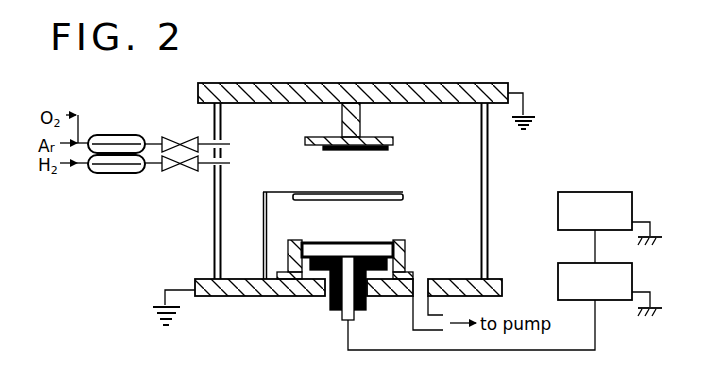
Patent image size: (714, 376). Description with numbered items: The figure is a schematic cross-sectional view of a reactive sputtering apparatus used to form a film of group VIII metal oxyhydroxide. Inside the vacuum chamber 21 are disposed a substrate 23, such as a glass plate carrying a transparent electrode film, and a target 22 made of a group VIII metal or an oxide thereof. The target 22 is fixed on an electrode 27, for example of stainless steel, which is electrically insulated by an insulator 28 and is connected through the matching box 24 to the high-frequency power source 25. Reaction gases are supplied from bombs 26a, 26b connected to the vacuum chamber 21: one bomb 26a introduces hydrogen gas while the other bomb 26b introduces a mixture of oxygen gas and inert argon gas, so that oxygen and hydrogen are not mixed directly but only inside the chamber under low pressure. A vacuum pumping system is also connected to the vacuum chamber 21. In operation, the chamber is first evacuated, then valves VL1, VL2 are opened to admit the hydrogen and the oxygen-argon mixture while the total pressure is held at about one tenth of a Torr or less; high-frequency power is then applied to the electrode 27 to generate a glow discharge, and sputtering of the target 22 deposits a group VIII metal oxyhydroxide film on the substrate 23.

The vacuum chamber 21 is at (443, 86).
The target for sputtering 22 is at (372, 243).
The substrate 23 is at (376, 150).
The matching box 24 is at (595, 281).
The high-frequency power source 25 is at (595, 211).
The bomb filled with reaction gas 26a is at (138, 173).
The bomb filled with reaction gas 26b is at (138, 135).
The electrode 27 is at (310, 253).
The insulator 28 is at (333, 310).
The valve VL1 is at (183, 137).
The valve VL2 is at (188, 173).